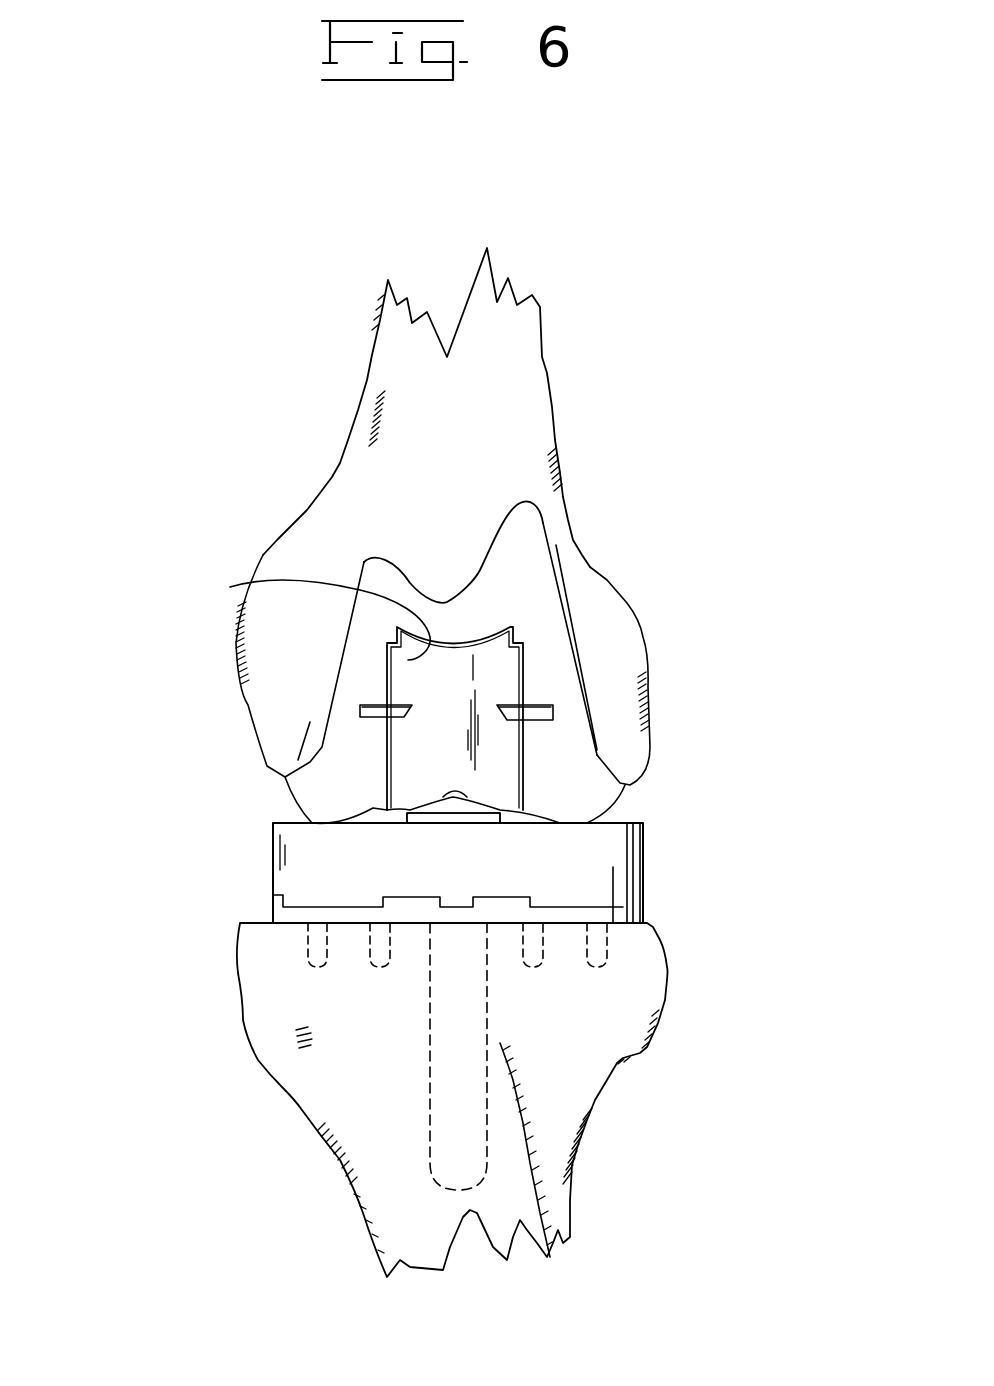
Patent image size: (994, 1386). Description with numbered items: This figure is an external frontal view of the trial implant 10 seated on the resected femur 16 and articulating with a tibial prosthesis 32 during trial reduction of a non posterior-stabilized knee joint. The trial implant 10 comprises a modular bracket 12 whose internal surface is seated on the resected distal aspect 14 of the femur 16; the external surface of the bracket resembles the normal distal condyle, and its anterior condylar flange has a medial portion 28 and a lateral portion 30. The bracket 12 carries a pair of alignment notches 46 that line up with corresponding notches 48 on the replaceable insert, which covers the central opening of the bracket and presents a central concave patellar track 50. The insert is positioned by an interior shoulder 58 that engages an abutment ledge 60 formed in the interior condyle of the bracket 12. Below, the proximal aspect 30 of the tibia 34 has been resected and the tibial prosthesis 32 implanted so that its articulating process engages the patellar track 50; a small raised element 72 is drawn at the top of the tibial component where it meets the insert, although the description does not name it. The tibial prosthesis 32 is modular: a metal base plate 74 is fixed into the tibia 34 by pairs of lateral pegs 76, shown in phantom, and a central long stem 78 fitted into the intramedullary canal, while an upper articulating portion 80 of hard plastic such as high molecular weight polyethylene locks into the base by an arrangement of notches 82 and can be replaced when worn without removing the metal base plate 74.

The trial implant 10 is at (256, 539).
The modular bracket 12 is at (616, 800).
The distal aspect 14 is at (275, 753).
The femur 16 is at (377, 375).
The medial portion of anterior condylar flange 28 is at (530, 523).
The proximal aspect 30 is at (387, 585).
The tibial prosthesis 32 is at (655, 855).
The tibia 34 is at (553, 1190).
The alignment notches 46 is at (390, 712).
The notches 48 is at (388, 743).
The patellar track 50 is at (500, 750).
The interior shoulder 58 is at (389, 672).
The abutment ledge 60 is at (230, 587).
The central post 72 is at (447, 803).
The metal base plate 74 is at (283, 912).
The lateral pegs 76 is at (308, 945).
The central long stem 78 is at (428, 1096).
The upper articulating portion 80 is at (287, 848).
The notches 82 is at (688, 875).